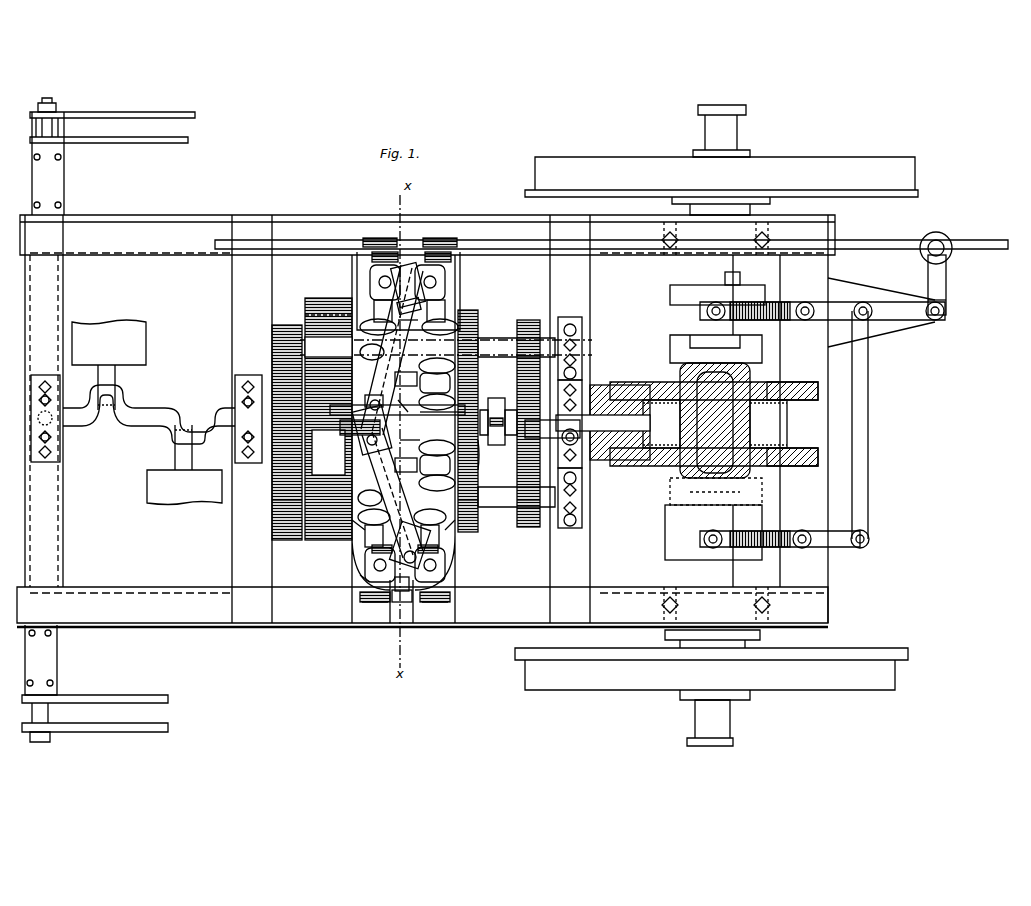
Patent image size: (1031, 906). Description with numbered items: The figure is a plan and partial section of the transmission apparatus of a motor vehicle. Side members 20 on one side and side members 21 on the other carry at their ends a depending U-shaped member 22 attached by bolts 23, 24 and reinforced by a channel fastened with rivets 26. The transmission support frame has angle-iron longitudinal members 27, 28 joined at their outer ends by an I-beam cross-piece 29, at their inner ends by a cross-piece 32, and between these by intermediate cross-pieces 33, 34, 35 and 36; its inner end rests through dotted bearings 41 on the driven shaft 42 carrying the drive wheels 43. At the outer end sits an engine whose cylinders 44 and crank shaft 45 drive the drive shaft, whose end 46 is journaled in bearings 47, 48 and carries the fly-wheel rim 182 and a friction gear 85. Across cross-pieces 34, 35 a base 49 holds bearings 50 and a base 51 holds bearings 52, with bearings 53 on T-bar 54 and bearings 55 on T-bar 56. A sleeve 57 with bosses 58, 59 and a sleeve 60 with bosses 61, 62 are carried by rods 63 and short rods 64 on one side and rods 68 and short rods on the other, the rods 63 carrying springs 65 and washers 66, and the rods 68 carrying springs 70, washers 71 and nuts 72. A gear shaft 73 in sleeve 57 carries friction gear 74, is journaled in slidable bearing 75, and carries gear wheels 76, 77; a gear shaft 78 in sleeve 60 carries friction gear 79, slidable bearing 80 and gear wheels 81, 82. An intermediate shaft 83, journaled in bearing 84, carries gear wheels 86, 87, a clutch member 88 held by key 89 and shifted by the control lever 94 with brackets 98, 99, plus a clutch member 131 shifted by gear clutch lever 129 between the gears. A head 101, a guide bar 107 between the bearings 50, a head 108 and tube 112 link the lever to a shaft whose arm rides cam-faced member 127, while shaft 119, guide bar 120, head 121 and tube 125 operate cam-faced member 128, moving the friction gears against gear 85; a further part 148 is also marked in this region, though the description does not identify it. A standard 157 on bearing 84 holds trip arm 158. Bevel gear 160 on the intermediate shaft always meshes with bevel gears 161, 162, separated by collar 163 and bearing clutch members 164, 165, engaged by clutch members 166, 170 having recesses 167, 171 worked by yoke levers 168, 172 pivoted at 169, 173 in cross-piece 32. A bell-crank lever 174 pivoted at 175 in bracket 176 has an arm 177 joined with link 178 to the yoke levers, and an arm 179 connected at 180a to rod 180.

The side members 20 is at (180, 122).
The side members 21 is at (150, 718).
The depending U-shaped member 22 is at (44, 403).
The bolts 23 is at (47, 98).
The bolts 24 is at (42, 742).
The rivets 26 is at (62, 203).
The longitudinal member 27 is at (427, 235).
The longitudinal member 28 is at (422, 607).
The I-beam cross-piece 29 is at (44, 401).
The cross-piece 32 is at (714, 420).
The intermediate cross-piece 33 is at (252, 419).
The intermediate cross-piece 34 is at (375, 610).
The intermediate cross-piece 35 is at (450, 610).
The intermediate cross-piece 36 is at (570, 419).
The bearings 41 is at (660, 225).
The driven shaft 42 is at (737, 130).
The drive wheels 43 is at (820, 168).
The cylinders 44 is at (147, 412).
The crank shaft 45 is at (145, 412).
The end of the drive shaft 46 is at (222, 410).
The bearing 47 is at (50, 462).
The bearing 48 is at (248, 375).
The base 49 is at (445, 290).
The bearings 50 is at (445, 275).
The base 51 is at (445, 575).
The bearings 52 is at (445, 562).
The bearings 53 is at (435, 383).
The T-bar 54 is at (437, 384).
The bearings 55 is at (435, 465).
The T-bar 56 is at (437, 447).
The sleeve 57 is at (393, 348).
The bosses 58 is at (409, 327).
The bosses 59 is at (372, 352).
The sleeve 60 is at (392, 493).
The bosses 61 is at (402, 528).
The bosses 62 is at (437, 483).
The rods 63 is at (445, 308).
The short rods 64 is at (406, 419).
The springs 65 is at (378, 238).
The washers 66 is at (400, 238).
The rods 68 is at (350, 532).
The springs 70 is at (450, 595).
The washers 71 is at (450, 603).
The nuts 72 is at (405, 605).
The gear shaft 73 is at (516, 347).
The friction gear 74 is at (312, 295).
The slidable bearing 75 is at (582, 345).
The gear wheel 76 is at (488, 315).
The gear wheel 77 is at (535, 320).
The gear shaft 78 is at (516, 497).
The friction gear 79 is at (295, 540).
The slidable bearing 80 is at (582, 500).
The gear wheel 81 is at (478, 525).
The gear wheel 82 is at (530, 528).
The intermediate shaft 83 is at (412, 440).
The bearing 84 is at (590, 385).
The friction gear 85 is at (388, 420).
The gear wheel 86 is at (478, 455).
The gear wheel 87 is at (510, 388).
The clutch member 88 is at (424, 413).
The key 89 is at (443, 412).
The operating or control lever 94 is at (412, 402).
The bracket 98 is at (365, 396).
The bracket 99 is at (372, 431).
The head 101 is at (379, 394).
The guide bar 107 is at (365, 285).
The head 108 is at (438, 240).
The tube 112 is at (416, 310).
The shaft 119 is at (402, 591).
The guide bar 120 is at (368, 570).
The head 121 is at (355, 590).
The tube 125 is at (367, 497).
The cam-faced member 127 is at (393, 437).
The cam-faced member 128 is at (409, 544).
The gear clutch lever 129 is at (497, 445).
The clutch member 131 is at (488, 400).
The gear web 148 is at (327, 464).
The standard 157 is at (569, 420).
The trip arm 158 is at (552, 429).
The bevel gear 160 is at (660, 418).
The bevel gear 161 is at (800, 380).
The bevel gear 162 is at (795, 468).
The collar 163 is at (768, 424).
The clutch member 164 is at (668, 350).
The clutch member 165 is at (668, 490).
The clutch member 166 is at (672, 288).
The circumferential recess 167 is at (700, 310).
The yoke lever 168 is at (765, 290).
The pivot 169 is at (808, 302).
The clutch member 170 is at (668, 520).
The circumferential recess 171 is at (700, 540).
The yoke lever 172 is at (845, 555).
The pivot 173 is at (800, 550).
The bell-crank lever 174 is at (946, 295).
The pivot 175 is at (950, 315).
The bracket 176 is at (885, 330).
The arm 177 is at (905, 315).
The link 178 is at (877, 425).
The arm 179 is at (946, 280).
The rod 180 is at (312, 238).
The pivotal connection 180a is at (940, 230).
The rim 182 is at (270, 480).